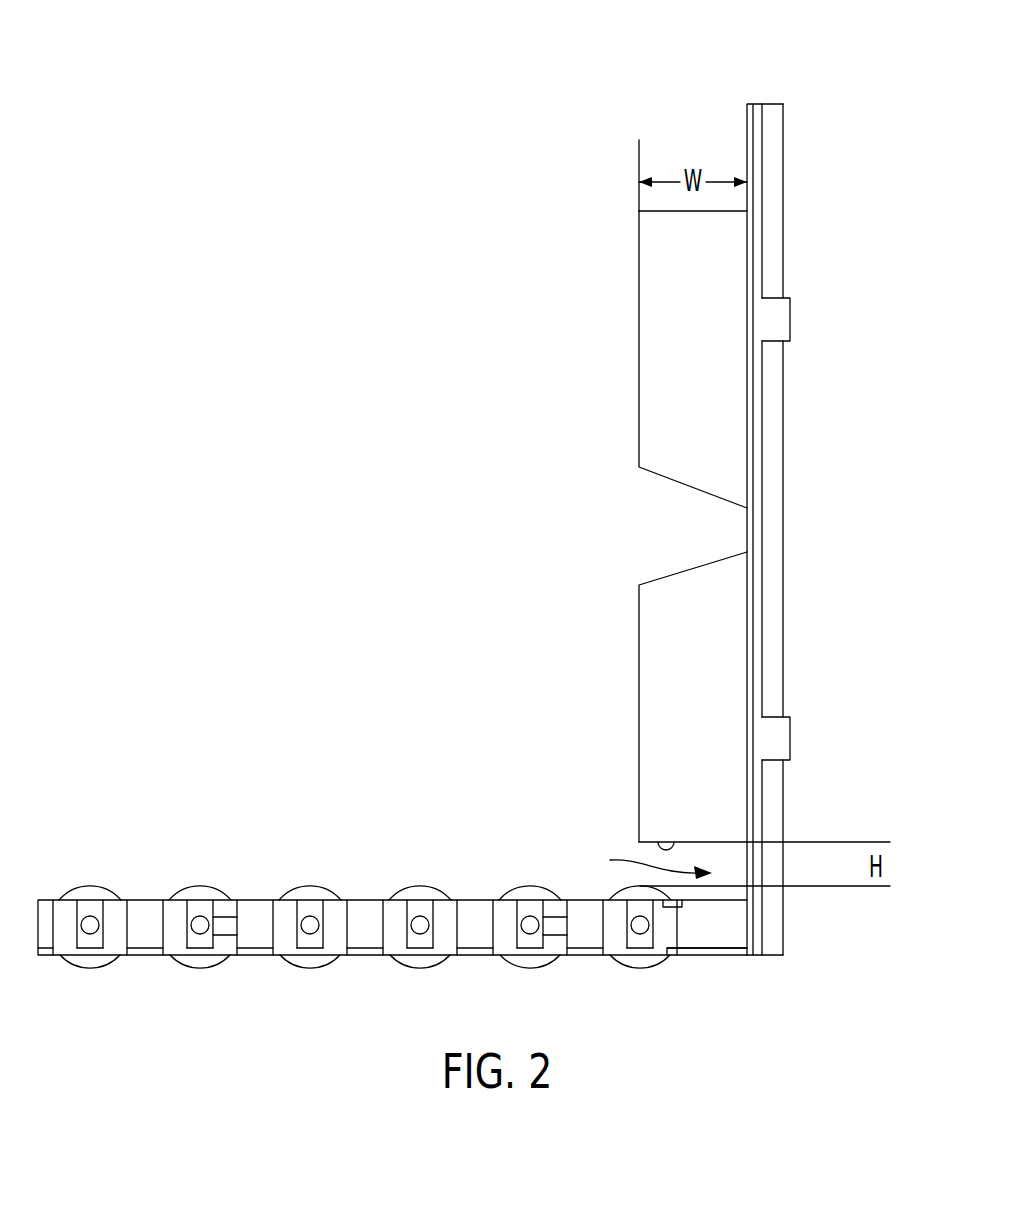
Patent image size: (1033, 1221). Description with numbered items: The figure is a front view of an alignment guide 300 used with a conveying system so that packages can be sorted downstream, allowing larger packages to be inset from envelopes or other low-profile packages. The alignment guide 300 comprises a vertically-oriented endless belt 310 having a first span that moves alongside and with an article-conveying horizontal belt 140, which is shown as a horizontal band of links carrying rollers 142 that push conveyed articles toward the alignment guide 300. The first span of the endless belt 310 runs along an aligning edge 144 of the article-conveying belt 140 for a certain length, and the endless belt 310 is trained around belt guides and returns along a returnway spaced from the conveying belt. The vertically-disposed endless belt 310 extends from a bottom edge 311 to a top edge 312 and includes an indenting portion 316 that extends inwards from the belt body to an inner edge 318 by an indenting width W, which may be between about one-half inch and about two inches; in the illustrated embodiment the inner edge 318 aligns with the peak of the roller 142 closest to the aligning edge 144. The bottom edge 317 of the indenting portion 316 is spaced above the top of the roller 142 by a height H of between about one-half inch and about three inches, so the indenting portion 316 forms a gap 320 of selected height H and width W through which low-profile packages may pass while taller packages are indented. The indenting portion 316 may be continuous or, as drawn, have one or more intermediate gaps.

The article-conveying horizontal belt 140 is at (260, 918).
The rollers 142 is at (88, 887).
The aligning edge 144 is at (750, 940).
The alignment guide 300 is at (842, 490).
The vertically-oriented endless belt 310 is at (782, 716).
The bottom edge 311 is at (778, 958).
The top edge 312 is at (772, 102).
The indenting portion 316 is at (666, 712).
The bottom edge of the indenting portion 317 is at (657, 853).
The inner edge 318 is at (637, 632).
The gap 320 is at (644, 862).